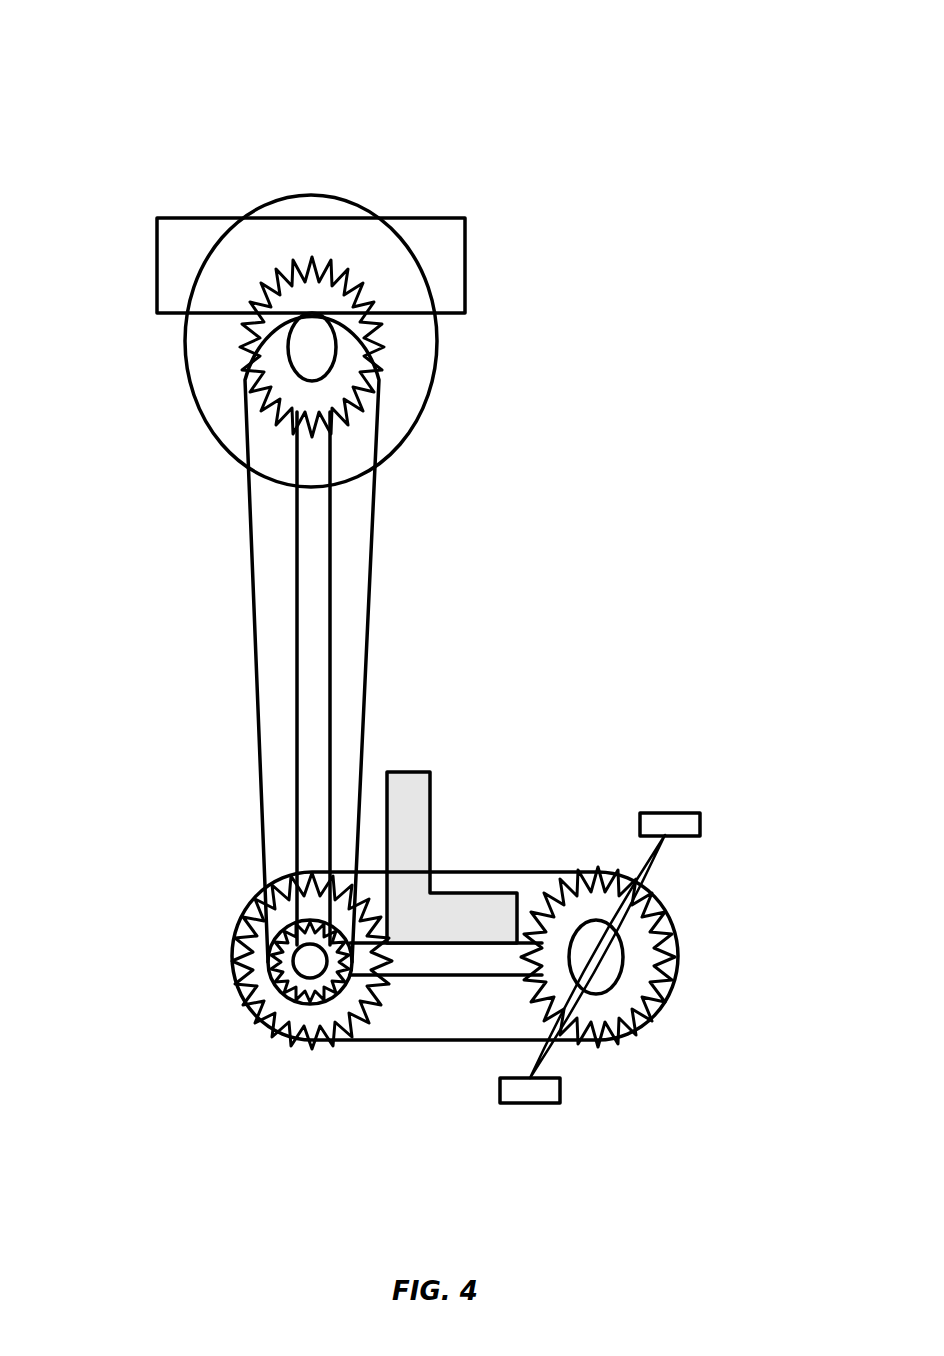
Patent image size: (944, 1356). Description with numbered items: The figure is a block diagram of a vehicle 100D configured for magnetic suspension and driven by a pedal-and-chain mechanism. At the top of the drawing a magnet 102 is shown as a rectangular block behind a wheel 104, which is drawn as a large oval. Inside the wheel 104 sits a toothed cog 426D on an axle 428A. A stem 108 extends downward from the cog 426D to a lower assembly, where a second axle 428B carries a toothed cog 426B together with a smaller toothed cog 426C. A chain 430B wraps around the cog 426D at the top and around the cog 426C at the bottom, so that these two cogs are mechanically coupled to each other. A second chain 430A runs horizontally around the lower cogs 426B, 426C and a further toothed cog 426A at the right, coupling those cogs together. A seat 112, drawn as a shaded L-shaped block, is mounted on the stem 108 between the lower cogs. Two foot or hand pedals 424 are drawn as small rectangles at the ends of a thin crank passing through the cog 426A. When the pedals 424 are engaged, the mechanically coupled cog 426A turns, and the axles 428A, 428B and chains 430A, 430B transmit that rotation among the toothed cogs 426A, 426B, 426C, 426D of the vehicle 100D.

The vehicle 100D is at (248, 94).
The magnet 102 is at (185, 262).
The wheel 104 is at (210, 375).
The stem 108 is at (318, 530).
The seat 112 is at (405, 780).
The foot or hand pedals 424 is at (698, 813).
The toothed cog 426A is at (637, 960).
The toothed cog 426B is at (296, 1040).
The toothed cog 426C is at (272, 1015).
The toothed cog 426D is at (347, 368).
The axle 428A is at (322, 350).
The axle 428B is at (302, 962).
The chain 430A is at (498, 872).
The chain 430B is at (372, 603).